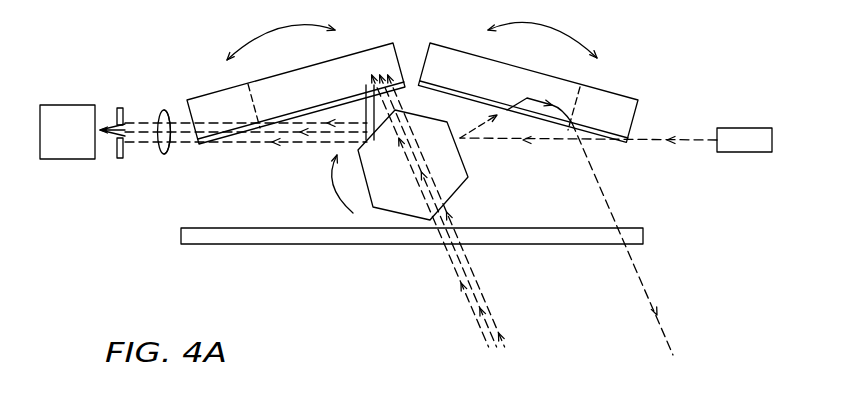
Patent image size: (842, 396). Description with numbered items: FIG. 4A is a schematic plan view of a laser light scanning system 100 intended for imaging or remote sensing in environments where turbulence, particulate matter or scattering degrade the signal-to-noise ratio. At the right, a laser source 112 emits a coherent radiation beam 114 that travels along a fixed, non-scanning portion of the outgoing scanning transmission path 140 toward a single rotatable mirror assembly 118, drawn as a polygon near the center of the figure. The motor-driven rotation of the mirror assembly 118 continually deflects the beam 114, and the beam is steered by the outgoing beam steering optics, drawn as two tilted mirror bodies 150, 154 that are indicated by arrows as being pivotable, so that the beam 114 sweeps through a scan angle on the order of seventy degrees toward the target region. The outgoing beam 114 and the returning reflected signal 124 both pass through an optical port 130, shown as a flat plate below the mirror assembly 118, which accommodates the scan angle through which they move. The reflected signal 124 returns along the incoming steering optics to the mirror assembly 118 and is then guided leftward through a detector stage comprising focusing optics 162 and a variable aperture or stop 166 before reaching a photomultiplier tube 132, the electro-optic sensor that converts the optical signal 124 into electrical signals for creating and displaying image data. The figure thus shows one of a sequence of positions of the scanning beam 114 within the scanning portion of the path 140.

The laser light scanning system 100 is at (113, 280).
The laser source 112 is at (745, 128).
The coherent radiation beam 114 is at (690, 141).
The single rotatable mirror assembly 118 is at (412, 192).
The signal 124 is at (483, 307).
The optical port 130 is at (643, 232).
The photomultiplier tube 132 is at (65, 105).
The outgoing scanning transmission path 140 is at (488, 142).
The second scanning mirror 150 is at (613, 93).
The first scanning mirror 154 is at (210, 94).
The focusing optics 162 is at (164, 154).
The variable aperture or stop 166 is at (120, 158).